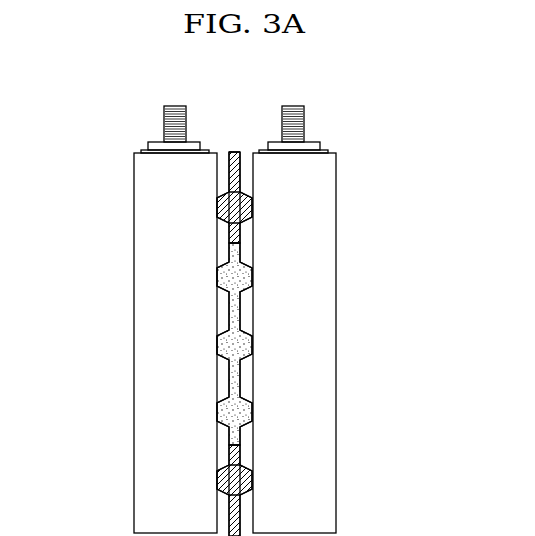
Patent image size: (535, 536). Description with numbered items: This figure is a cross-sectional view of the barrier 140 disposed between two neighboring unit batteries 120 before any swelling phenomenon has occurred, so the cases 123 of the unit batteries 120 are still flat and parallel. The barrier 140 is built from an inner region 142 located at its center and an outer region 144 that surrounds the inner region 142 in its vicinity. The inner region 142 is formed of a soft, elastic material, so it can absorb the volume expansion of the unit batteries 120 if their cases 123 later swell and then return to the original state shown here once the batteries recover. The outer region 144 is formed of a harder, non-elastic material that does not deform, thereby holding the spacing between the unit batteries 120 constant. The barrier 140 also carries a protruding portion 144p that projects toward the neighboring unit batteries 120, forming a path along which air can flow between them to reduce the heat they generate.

The unit battery 120 is at (241, 319).
The case 123 is at (143, 481).
The barrier 140 is at (311, 296).
The inner region 142 is at (235, 343).
The outer region 144 is at (237, 207).
The protruding portion 144p is at (252, 477).